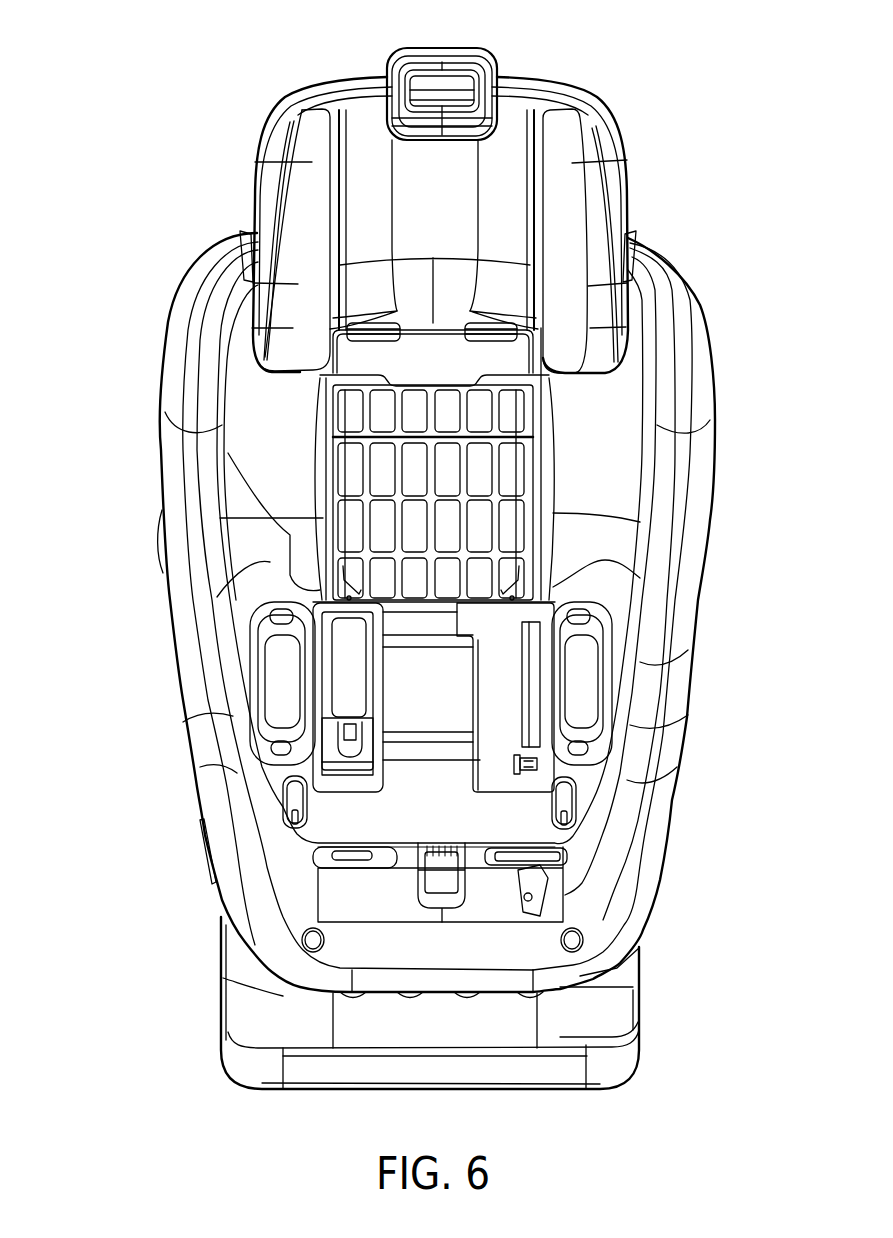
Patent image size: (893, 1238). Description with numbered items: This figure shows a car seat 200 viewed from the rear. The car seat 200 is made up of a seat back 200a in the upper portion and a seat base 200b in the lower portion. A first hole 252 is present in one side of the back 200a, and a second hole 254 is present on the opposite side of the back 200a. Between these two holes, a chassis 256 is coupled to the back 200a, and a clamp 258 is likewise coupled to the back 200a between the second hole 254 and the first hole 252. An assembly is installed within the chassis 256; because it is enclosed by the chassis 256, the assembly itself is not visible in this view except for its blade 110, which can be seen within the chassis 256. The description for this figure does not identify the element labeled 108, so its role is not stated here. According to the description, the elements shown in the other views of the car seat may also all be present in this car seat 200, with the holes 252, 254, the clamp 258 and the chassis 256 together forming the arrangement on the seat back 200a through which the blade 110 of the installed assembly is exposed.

The car seat 200 is at (132, 699).
The seat back 200a is at (265, 432).
The seat base 200b is at (357, 890).
The first hole 252 is at (580, 678).
The second hole 254 is at (278, 680).
The chassis 256 is at (510, 673).
The clamp 258 is at (345, 665).
The blade 110 is at (540, 685).
The release button 108 is at (540, 763).